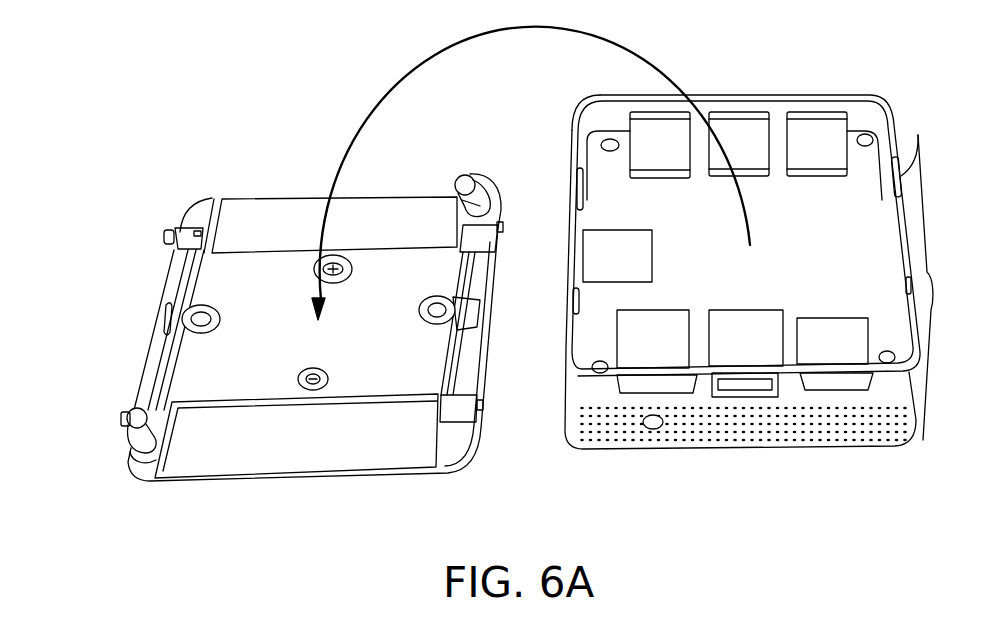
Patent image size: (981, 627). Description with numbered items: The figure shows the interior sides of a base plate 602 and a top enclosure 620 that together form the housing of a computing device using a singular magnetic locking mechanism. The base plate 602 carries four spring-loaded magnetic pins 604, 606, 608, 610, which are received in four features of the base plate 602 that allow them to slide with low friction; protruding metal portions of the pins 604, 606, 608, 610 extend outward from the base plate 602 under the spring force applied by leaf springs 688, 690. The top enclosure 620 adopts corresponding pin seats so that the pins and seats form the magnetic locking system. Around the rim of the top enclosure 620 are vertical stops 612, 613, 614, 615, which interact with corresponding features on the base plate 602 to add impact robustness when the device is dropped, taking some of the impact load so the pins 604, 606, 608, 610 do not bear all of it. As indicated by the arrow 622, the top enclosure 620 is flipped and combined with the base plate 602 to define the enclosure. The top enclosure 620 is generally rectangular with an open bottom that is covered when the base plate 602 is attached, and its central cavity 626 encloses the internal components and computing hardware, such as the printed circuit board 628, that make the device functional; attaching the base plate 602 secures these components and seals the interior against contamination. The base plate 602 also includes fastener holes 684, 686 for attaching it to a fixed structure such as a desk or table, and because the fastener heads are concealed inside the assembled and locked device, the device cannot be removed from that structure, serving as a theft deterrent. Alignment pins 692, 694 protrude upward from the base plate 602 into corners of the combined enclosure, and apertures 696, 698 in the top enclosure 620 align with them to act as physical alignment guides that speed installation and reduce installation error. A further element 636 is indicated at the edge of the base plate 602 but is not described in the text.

The base plate 602 is at (284, 166).
The spring-loaded magnetic pin 604 is at (170, 228).
The spring-loaded magnetic pin 606 is at (122, 420).
The spring-loaded magnetic pin 608 is at (498, 182).
The spring-loaded magnetic pin 610 is at (480, 415).
The vertical stop 612 is at (576, 188).
The vertical stop 613 is at (571, 303).
The vertical stop 614 is at (917, 130).
The vertical stop 615 is at (923, 440).
The top enclosure 620 is at (788, 58).
The arrow 622 is at (385, 105).
The central cavity 626 is at (709, 283).
The printed circuit board 628 is at (841, 266).
The housing edge 636 is at (82, 247).
The fastener hole 684 is at (335, 280).
The fastener hole 686 is at (311, 368).
The leaf spring 688 is at (172, 372).
The leaf spring 690 is at (458, 268).
The alignment pin 692 is at (152, 440).
The alignment pin 694 is at (455, 212).
The aperture 696 is at (600, 372).
The aperture 698 is at (863, 147).